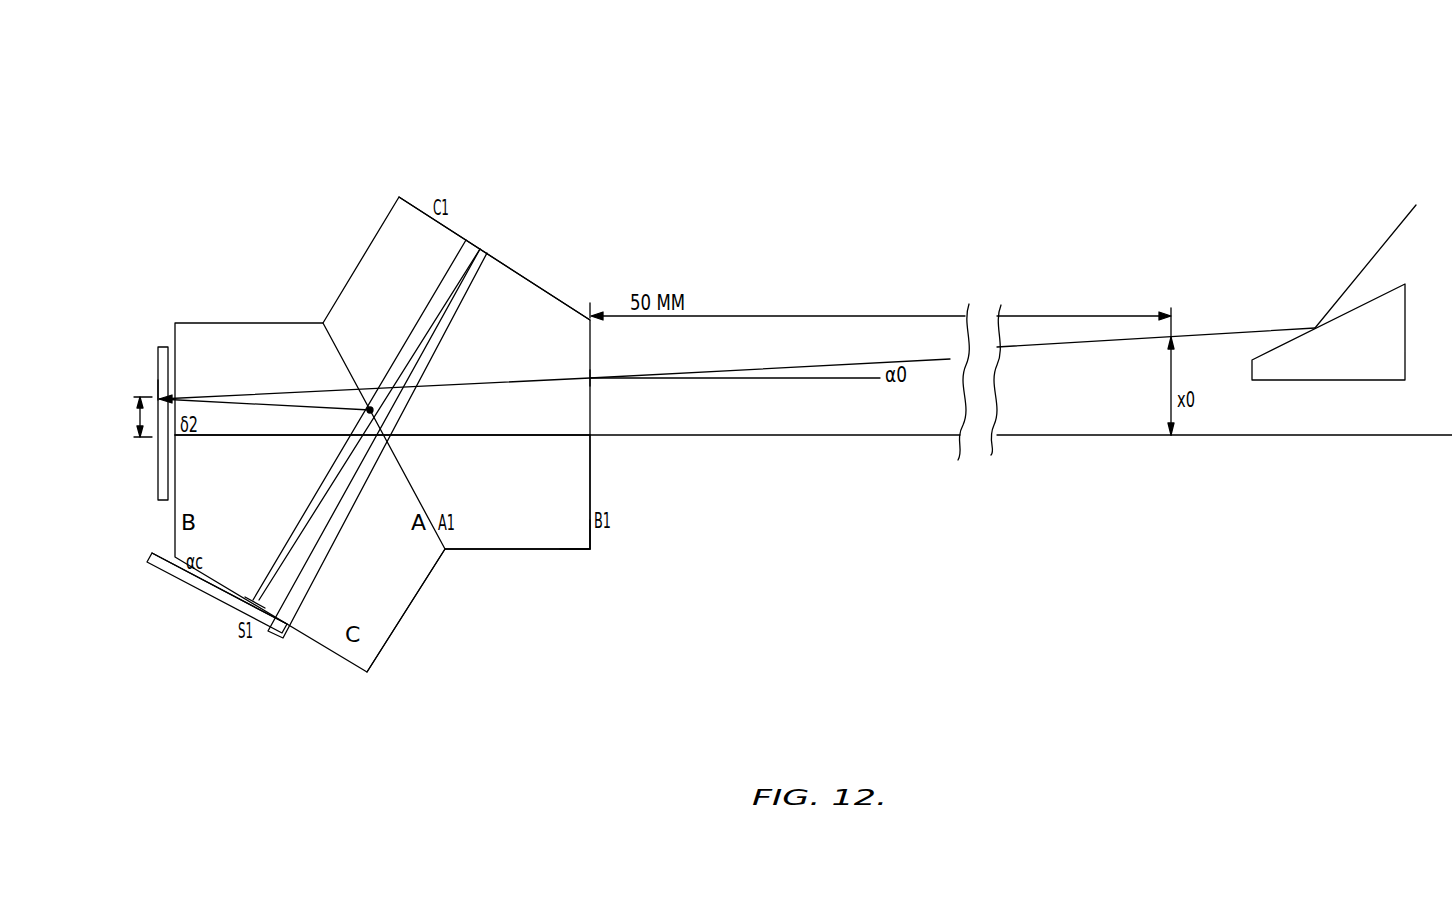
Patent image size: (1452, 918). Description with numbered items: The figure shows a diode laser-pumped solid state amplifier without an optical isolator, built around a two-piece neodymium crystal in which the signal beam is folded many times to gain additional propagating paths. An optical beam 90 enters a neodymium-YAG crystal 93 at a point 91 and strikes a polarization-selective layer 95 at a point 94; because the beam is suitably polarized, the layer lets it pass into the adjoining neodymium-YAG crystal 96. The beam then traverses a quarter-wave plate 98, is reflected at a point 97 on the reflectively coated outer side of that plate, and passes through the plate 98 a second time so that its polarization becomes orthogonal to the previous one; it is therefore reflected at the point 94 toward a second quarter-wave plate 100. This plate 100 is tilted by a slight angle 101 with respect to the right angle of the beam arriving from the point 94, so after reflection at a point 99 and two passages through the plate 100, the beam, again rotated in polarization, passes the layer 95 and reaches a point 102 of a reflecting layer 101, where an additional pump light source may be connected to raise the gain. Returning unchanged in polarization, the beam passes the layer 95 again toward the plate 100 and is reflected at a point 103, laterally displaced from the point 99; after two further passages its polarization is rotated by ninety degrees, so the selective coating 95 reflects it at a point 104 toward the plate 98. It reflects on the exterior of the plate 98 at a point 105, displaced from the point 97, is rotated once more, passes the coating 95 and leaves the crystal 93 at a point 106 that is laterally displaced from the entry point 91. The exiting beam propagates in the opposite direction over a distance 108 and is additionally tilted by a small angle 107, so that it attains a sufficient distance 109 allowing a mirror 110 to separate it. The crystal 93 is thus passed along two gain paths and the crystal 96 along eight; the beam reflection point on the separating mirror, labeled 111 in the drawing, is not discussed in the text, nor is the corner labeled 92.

The optical beam 90 is at (1183, 437).
The entry point 91 is at (591, 442).
The prism corner 92 is at (592, 545).
The neodymium-YAG crystal 93 is at (525, 537).
The point on the polarization-selective layer 94 is at (385, 436).
The polarization-selective layer 95 is at (420, 502).
The adjoining neodymium-YAG crystal 96 is at (374, 627).
The reflection point 97 is at (138, 415).
The quarter-wave plate 98 is at (160, 347).
The reflection point 99 is at (271, 634).
The second quarter-wave plate 100 is at (184, 578).
The reflecting layer 101 is at (562, 300).
The reflection point on the reflecting layer 102 is at (482, 247).
The reflection point 103 is at (242, 618).
The reflection point on the polarization-selective coating 104 is at (370, 408).
The reflection point 105 is at (158, 388).
The exit point 106 is at (595, 380).
The small tilt angle 107 is at (833, 378).
The distance 108 is at (748, 316).
The sufficient distance 109 is at (1169, 418).
The mirror 110 is at (1406, 330).
The reflected beam 111 is at (1356, 278).